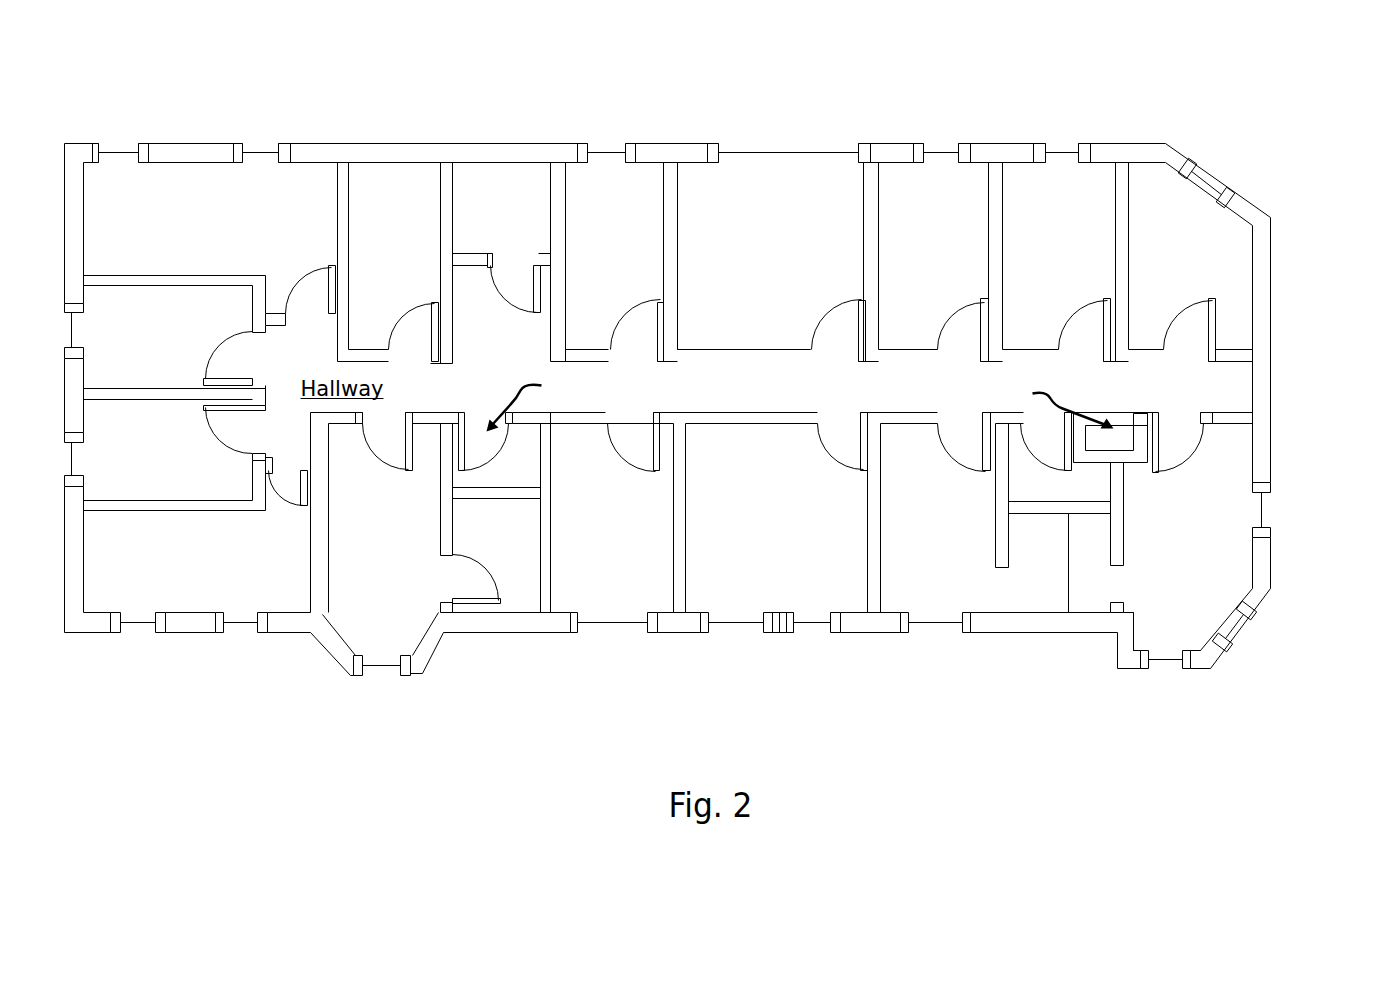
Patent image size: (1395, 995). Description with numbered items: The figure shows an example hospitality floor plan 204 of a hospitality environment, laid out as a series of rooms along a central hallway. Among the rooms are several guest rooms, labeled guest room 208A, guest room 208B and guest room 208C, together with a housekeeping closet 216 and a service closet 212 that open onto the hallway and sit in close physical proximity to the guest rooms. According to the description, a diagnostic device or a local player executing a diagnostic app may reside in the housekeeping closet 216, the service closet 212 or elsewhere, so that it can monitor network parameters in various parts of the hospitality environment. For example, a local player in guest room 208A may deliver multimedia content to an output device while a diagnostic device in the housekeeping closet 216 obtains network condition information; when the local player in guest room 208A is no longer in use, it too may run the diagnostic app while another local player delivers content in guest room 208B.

The hospitality floor plan 204 is at (1283, 127).
The guest room 208A is at (295, 549).
The guest room 208B is at (780, 204).
The guest room 208C is at (1213, 595).
The service closet 212 is at (1129, 424).
The housekeeping closet 216 is at (479, 428).